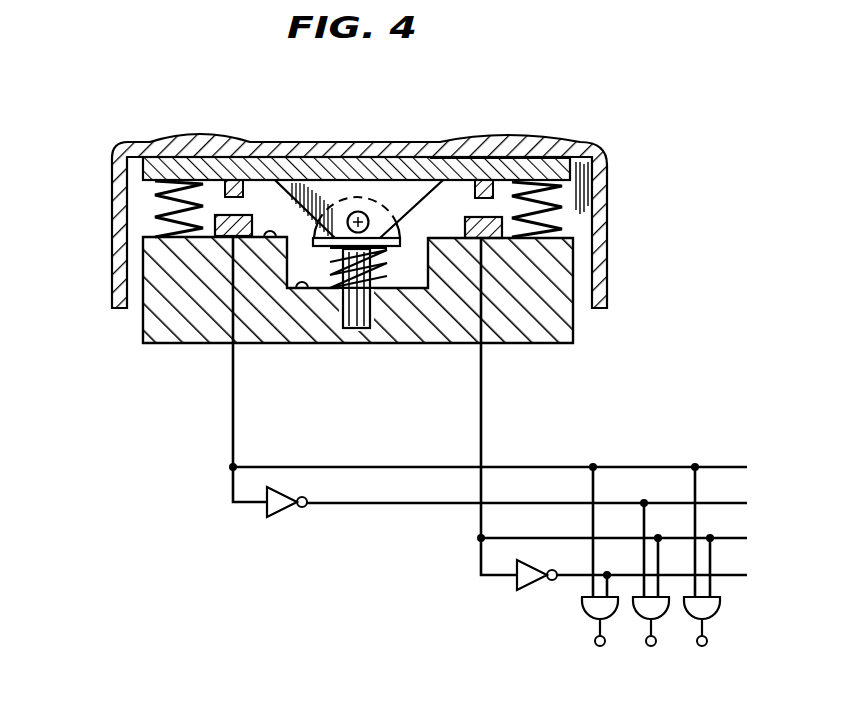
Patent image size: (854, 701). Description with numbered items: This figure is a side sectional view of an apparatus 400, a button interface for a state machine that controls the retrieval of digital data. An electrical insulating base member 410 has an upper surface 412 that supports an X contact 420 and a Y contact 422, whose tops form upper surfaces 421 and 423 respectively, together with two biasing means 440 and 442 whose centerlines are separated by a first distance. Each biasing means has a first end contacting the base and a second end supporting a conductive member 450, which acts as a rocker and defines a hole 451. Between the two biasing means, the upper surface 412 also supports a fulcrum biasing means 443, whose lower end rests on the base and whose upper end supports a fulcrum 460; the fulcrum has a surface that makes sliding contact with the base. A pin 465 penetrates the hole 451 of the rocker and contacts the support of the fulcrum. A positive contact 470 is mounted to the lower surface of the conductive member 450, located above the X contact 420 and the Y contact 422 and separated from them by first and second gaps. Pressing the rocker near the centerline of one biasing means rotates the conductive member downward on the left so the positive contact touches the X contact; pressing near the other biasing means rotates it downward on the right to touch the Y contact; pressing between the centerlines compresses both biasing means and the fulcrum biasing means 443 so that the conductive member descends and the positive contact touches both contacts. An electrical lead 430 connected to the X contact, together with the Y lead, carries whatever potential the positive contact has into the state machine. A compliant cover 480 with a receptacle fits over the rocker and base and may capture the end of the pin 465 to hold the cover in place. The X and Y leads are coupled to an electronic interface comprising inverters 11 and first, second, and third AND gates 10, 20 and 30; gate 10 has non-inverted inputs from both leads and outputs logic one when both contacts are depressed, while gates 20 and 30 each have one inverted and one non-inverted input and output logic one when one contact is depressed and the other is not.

The apparatus 400 is at (630, 95).
The electrical insulating base member 410 is at (529, 338).
The upper surface 412 is at (300, 293).
The X contact 420 is at (233, 237).
The upper surface 421 is at (253, 180).
The Y contact 422 is at (470, 240).
The upper surface 423 is at (461, 162).
The electrical lead 430 is at (233, 432).
The biasing means 440 is at (155, 198).
The biasing means 442 is at (593, 211).
The fulcrum biasing means 443 is at (330, 262).
The conductive member 450 is at (290, 179).
The hole 451 is at (352, 213).
The fulcrum 460 is at (355, 318).
The pin 465 is at (366, 213).
The positive contact 470 is at (232, 180).
The compliant cover 480 is at (596, 144).
The inverters 11 is at (275, 512).
The first AND gate 10 is at (712, 615).
The second AND gate 20 is at (659, 615).
The third AND gate 30 is at (607, 615).